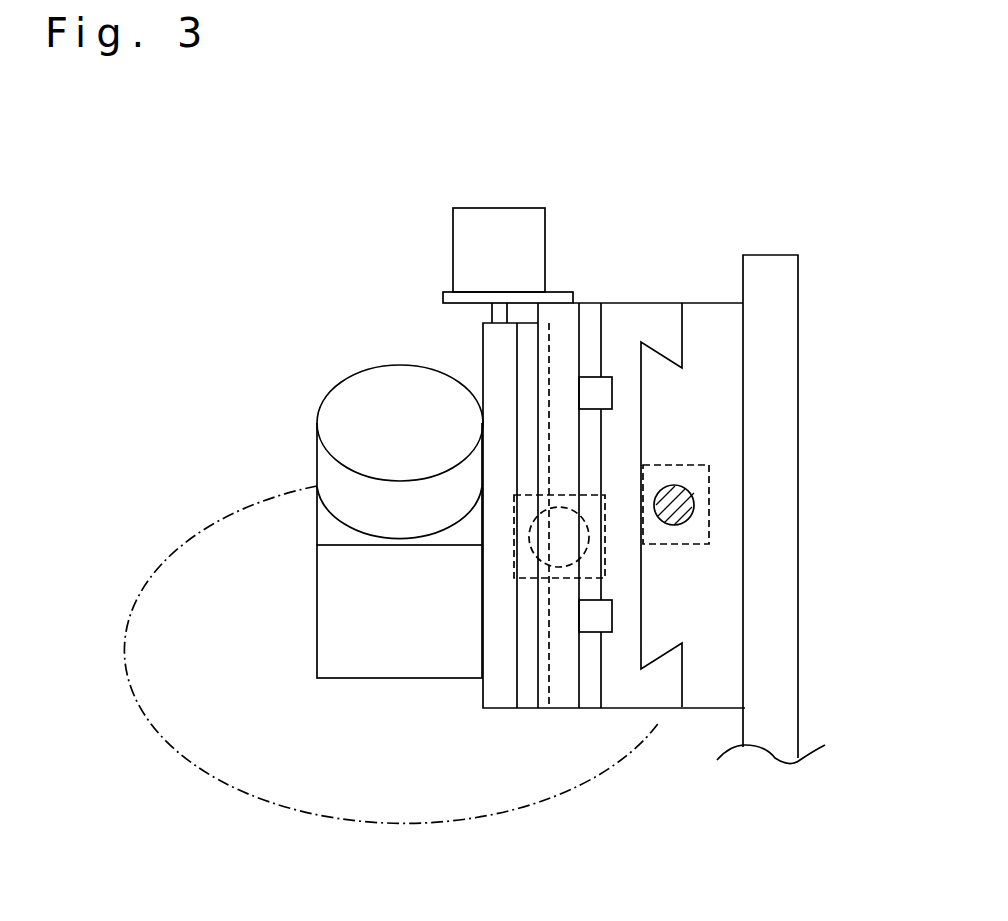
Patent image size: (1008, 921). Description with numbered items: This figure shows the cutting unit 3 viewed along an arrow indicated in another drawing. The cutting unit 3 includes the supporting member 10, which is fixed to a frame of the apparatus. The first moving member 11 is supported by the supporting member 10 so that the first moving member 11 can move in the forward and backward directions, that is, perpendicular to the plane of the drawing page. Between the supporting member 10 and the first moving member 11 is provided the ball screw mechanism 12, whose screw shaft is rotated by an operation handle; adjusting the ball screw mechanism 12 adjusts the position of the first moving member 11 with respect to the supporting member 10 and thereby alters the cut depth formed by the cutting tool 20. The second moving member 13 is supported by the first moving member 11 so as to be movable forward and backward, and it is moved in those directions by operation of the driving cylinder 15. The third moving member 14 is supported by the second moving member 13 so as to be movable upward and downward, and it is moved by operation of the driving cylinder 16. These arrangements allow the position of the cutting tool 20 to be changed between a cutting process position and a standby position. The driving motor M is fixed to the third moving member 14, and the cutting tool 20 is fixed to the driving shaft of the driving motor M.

The cutting unit 3 is at (762, 205).
The supporting member 10 is at (798, 493).
The first moving member 11 is at (659, 323).
The ball screw mechanism 12 is at (675, 462).
The second moving member 13 is at (567, 323).
The third moving member 14 is at (500, 362).
The driving cylinder 15 is at (570, 580).
The driving cylinder 16 is at (476, 207).
The cutting tool 20 is at (133, 690).
The driving motor M is at (317, 450).